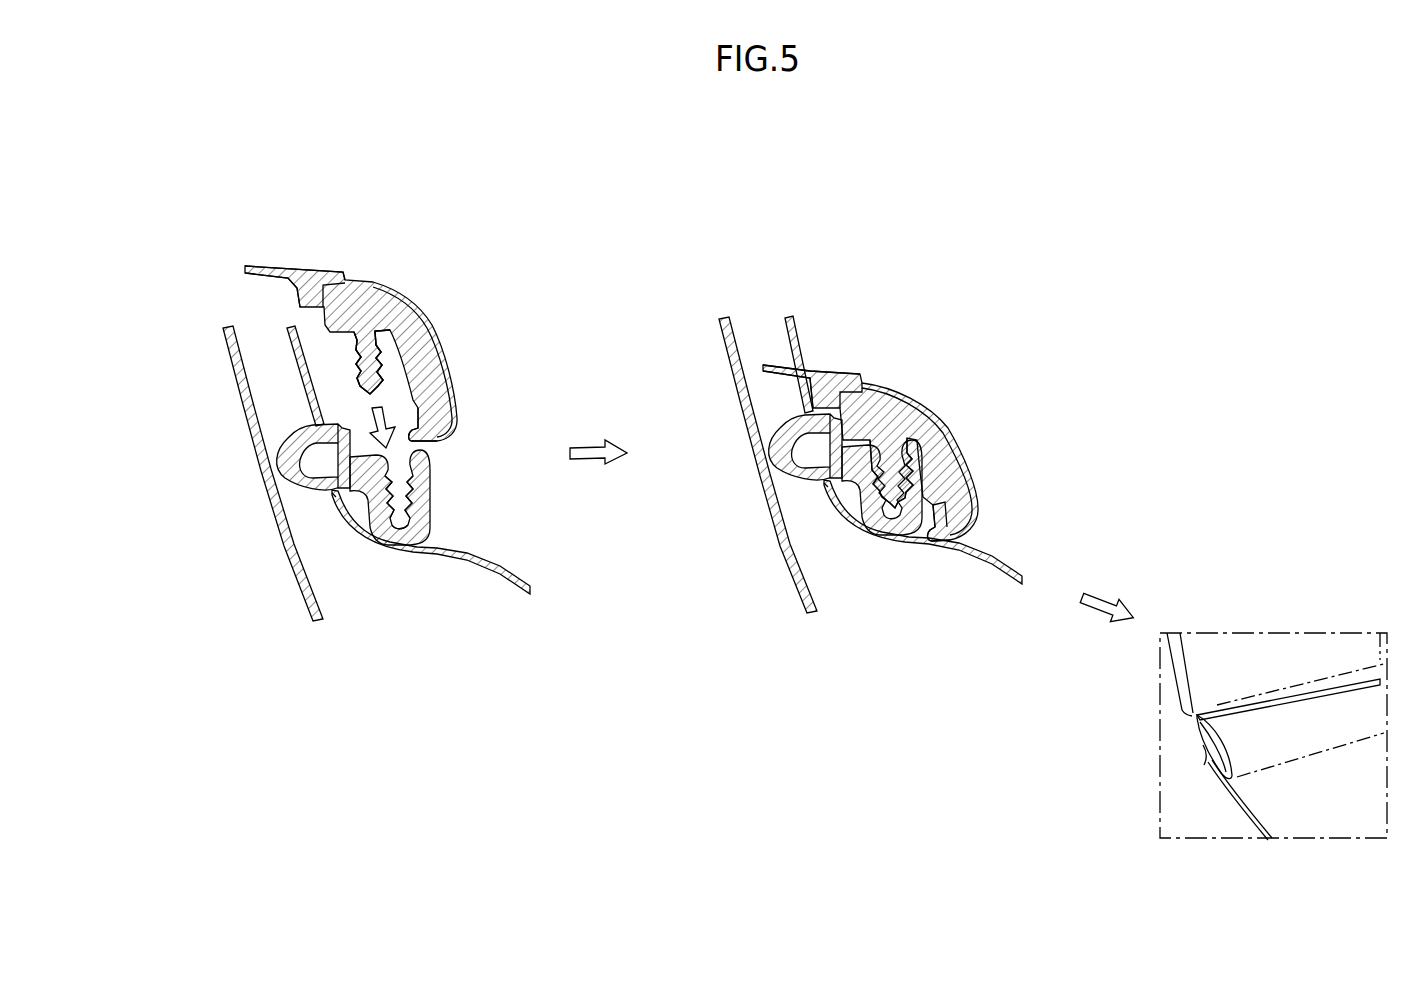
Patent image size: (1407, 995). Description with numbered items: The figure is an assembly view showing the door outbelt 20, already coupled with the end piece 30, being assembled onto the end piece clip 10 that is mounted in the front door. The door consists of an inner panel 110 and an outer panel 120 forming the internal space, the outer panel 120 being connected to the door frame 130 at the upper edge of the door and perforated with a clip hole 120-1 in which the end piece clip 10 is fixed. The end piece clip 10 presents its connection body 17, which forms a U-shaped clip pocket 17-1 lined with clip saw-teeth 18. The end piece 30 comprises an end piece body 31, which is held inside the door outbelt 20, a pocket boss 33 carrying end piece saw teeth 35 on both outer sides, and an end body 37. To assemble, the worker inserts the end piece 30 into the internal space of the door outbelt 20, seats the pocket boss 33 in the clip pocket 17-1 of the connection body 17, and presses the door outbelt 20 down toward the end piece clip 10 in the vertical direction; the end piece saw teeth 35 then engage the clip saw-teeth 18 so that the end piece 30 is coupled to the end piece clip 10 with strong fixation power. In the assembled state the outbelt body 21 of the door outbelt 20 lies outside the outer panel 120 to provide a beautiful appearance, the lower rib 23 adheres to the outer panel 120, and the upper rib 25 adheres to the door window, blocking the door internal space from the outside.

The end piece clip 10 is at (278, 466).
The connection body 17 is at (702, 488).
The clip pocket 17-1 is at (403, 517).
The clip saw-teeth 18 is at (404, 468).
The door outbelt 20 is at (767, 506).
The outbelt body 21 is at (386, 282).
The lower rib 23 is at (417, 422).
The upper rib 25 is at (293, 266).
The end piece 30 is at (150, 292).
The end piece body 31 is at (330, 317).
The pocket boss 33 is at (357, 373).
The end piece saw teeth 35 is at (898, 476).
The end body 37 is at (1222, 758).
The inner panel 110 is at (290, 568).
The outer panel 120 is at (453, 560).
The clip hole 120-1 is at (333, 500).
The door frame 130 is at (794, 333).